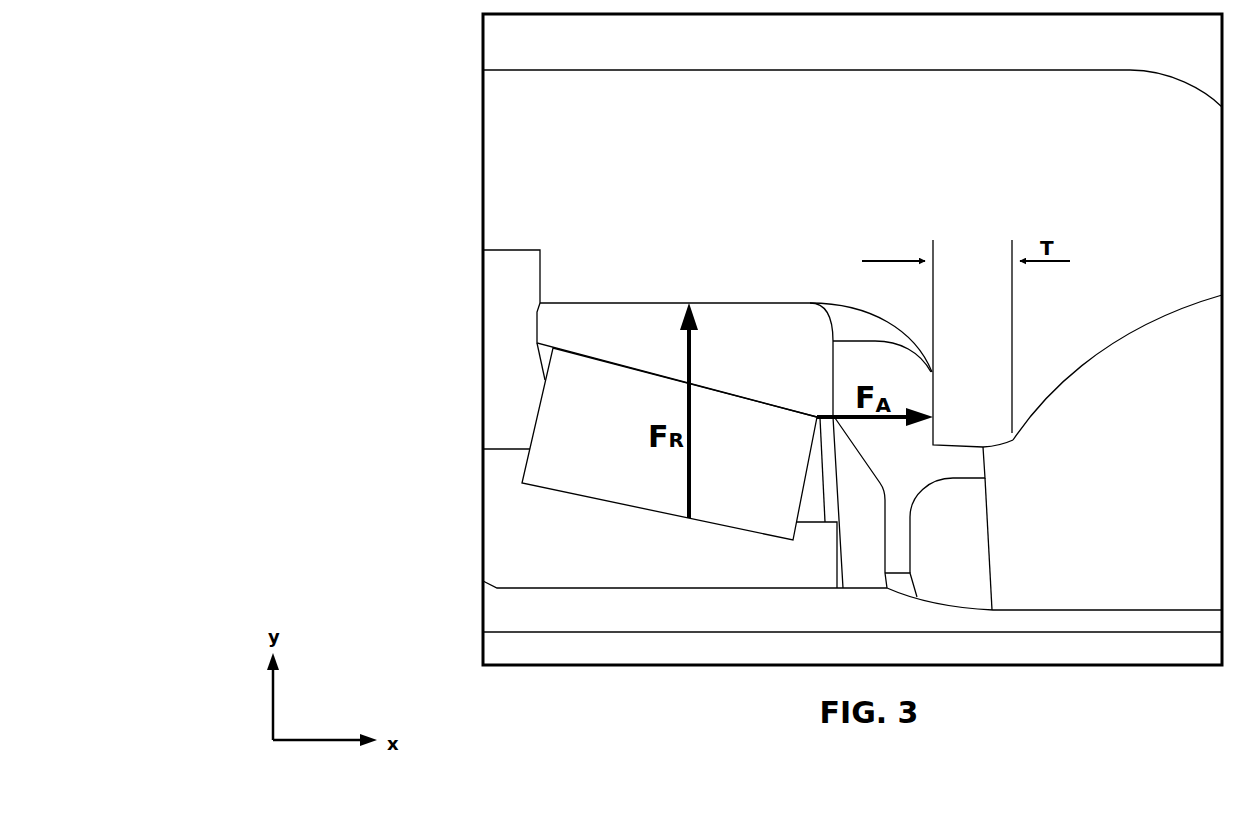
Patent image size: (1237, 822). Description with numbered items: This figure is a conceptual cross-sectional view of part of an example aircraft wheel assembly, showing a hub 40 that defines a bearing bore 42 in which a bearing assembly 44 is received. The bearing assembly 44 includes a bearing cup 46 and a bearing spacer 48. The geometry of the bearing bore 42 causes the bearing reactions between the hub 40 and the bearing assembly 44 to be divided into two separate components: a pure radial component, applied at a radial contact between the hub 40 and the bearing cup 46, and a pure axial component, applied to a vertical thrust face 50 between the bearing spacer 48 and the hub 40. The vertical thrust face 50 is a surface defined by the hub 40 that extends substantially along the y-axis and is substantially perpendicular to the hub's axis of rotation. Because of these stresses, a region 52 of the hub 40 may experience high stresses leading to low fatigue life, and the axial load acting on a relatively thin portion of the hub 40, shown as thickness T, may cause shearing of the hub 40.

The hub 40 is at (852, 255).
The bearing bore 42 is at (868, 310).
The bearing assembly 44 is at (736, 275).
The bearing cup 46 is at (690, 445).
The bearing spacer 48 is at (913, 514).
The vertical thrust face 50 is at (935, 407).
The region 52 is at (843, 292).